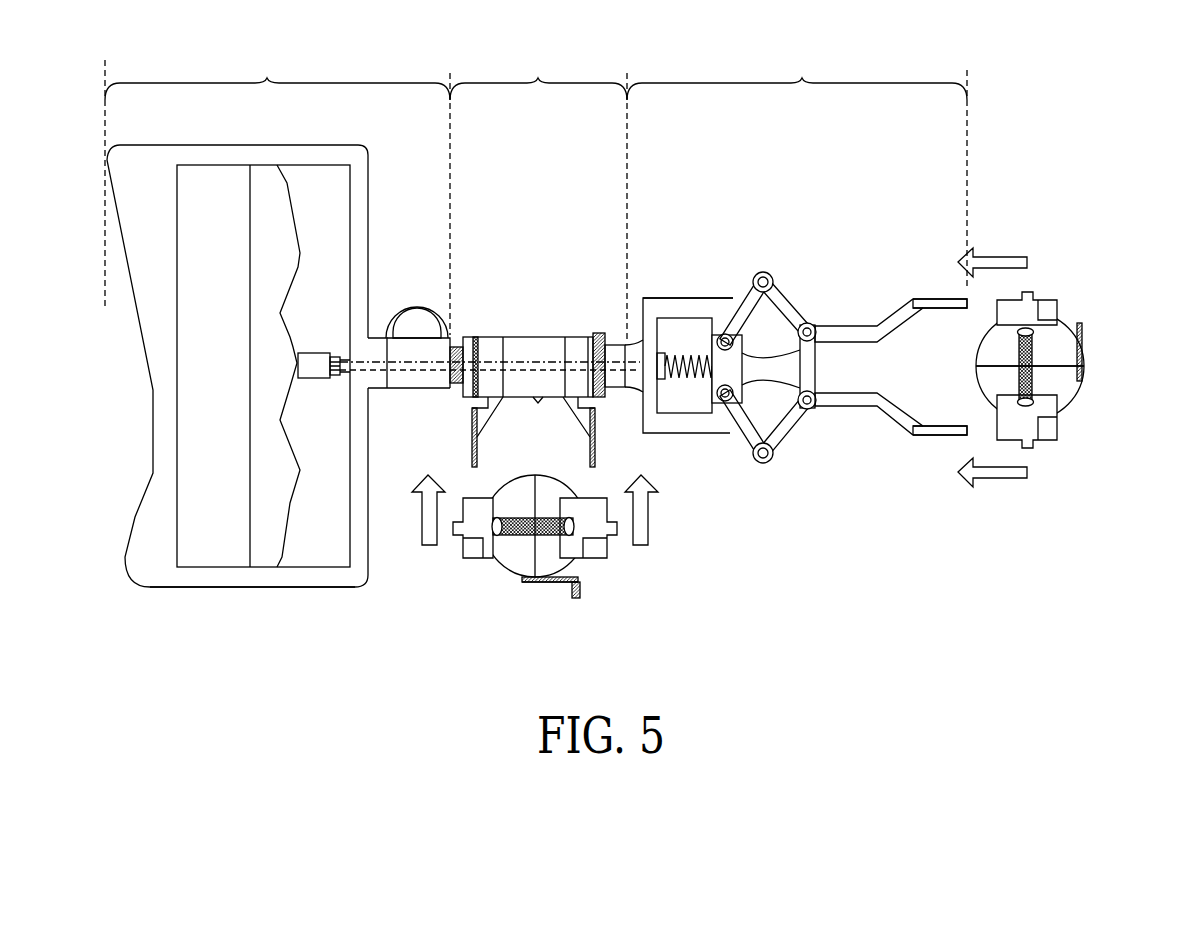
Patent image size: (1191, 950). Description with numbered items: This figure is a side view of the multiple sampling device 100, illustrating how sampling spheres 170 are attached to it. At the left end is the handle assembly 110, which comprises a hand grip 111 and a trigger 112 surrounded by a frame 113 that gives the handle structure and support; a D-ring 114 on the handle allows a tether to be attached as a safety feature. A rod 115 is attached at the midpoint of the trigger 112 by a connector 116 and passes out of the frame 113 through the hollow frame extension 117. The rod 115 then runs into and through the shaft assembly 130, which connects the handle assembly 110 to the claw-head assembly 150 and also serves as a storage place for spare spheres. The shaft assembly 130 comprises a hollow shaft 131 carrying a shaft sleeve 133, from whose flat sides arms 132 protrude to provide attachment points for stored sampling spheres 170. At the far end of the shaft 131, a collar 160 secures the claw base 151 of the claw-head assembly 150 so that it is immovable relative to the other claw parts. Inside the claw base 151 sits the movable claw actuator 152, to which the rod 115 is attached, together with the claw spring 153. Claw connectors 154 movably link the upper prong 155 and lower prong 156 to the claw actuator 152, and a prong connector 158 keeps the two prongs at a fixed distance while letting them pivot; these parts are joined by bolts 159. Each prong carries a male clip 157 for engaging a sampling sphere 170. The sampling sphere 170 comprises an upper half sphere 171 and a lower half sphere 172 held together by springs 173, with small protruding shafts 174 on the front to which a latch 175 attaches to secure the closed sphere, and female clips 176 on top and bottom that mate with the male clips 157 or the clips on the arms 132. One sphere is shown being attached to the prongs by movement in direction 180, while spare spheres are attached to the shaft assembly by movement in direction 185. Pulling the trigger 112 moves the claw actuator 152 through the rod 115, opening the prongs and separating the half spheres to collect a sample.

The multiple sampling device 100 is at (1157, 52).
The handle assembly 110 is at (361, 356).
The hand grip 111 is at (150, 382).
The trigger 112 is at (246, 344).
The frame 113 is at (287, 592).
The D-ring 114 is at (417, 308).
The rod 115 is at (434, 369).
The connector 116 is at (313, 351).
The frame extension 117 is at (377, 335).
The shaft assembly 130 is at (546, 261).
The shaft 131 is at (456, 344).
The arms 132 is at (588, 448).
The shaft sleeve 133 is at (533, 336).
The claw-head assembly 150 is at (797, 278).
The claw base 151 is at (690, 297).
The claw actuator 152 is at (716, 409).
The claw spring 153 is at (694, 386).
The claw connectors 154 is at (743, 299).
The upper prong 155 is at (848, 325).
The lower prong 156 is at (861, 404).
The male clip 157 is at (932, 298).
The prong connector 158 is at (819, 367).
The bolts 159 is at (815, 325).
The collar 160 is at (633, 357).
The sampling sphere 170 is at (1057, 352).
The upper half sphere 171 is at (1080, 345).
The lower half sphere 172 is at (1060, 380).
The springs 173 is at (975, 347).
The protruding shafts 174 is at (538, 584).
The latch 175 is at (1083, 345).
The female clips 176 is at (1038, 298).
The direction 180 is at (998, 257).
The direction 185 is at (419, 521).